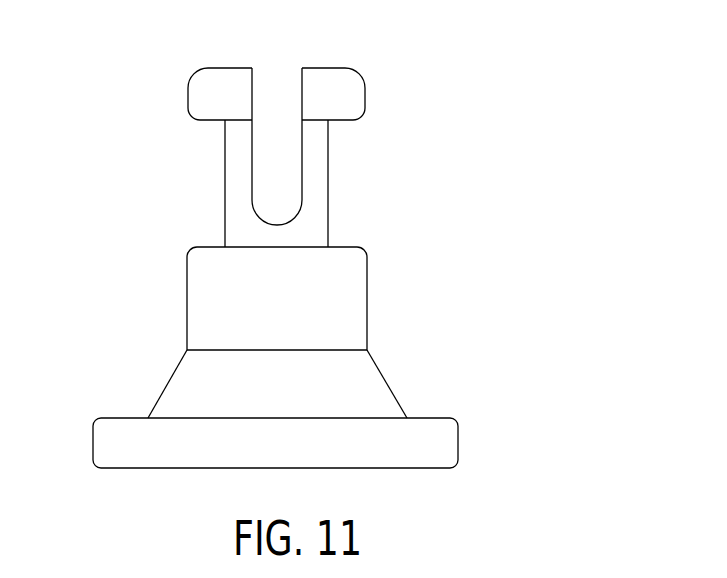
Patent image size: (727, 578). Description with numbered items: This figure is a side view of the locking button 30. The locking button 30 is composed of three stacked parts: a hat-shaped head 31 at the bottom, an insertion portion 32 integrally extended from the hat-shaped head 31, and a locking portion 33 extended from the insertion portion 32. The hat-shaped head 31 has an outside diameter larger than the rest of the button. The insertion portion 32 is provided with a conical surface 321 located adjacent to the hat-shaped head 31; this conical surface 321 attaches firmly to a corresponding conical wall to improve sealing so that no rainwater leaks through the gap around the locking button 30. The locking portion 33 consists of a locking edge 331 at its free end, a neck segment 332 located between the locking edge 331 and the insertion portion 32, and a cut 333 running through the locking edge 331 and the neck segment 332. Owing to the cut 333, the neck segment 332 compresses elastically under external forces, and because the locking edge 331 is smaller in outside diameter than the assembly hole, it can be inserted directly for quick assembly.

The locking button 30 is at (326, 238).
The hat-shaped head 31 is at (458, 440).
The insertion portion 32 is at (276, 332).
The conical surface 321 is at (167, 380).
The locking portion 33 is at (283, 128).
The locking edge 331 is at (188, 98).
The neck segment 332 is at (225, 180).
The cut 333 is at (314, 116).